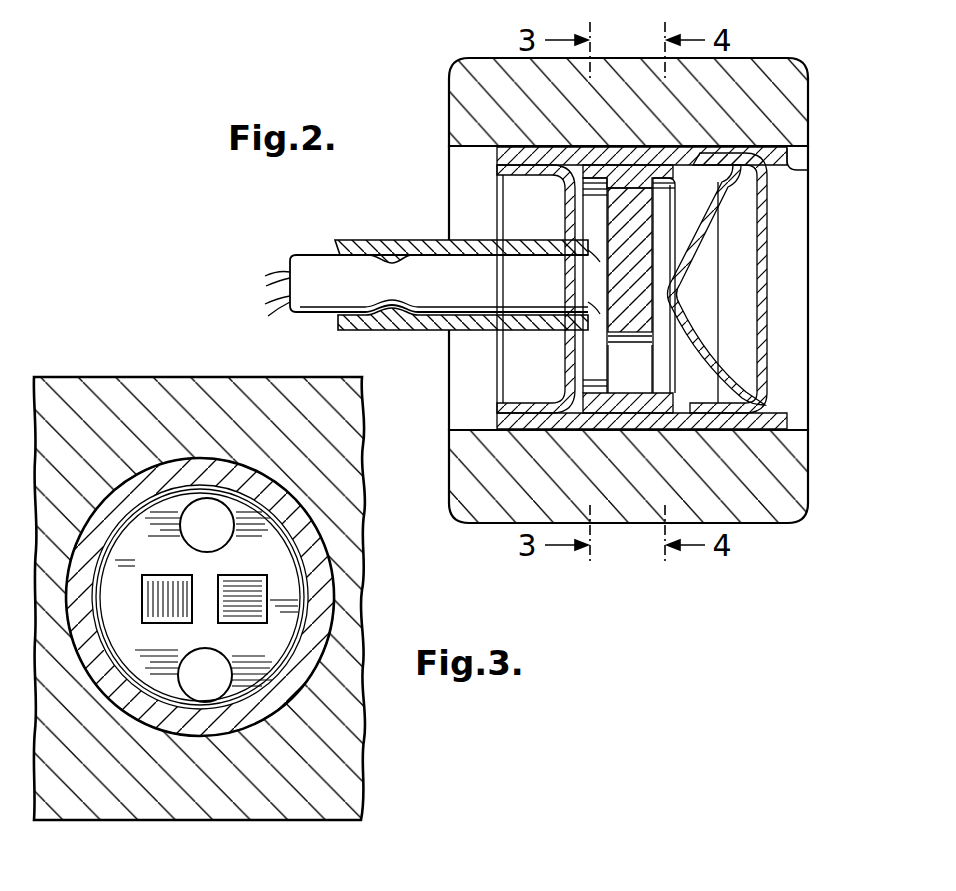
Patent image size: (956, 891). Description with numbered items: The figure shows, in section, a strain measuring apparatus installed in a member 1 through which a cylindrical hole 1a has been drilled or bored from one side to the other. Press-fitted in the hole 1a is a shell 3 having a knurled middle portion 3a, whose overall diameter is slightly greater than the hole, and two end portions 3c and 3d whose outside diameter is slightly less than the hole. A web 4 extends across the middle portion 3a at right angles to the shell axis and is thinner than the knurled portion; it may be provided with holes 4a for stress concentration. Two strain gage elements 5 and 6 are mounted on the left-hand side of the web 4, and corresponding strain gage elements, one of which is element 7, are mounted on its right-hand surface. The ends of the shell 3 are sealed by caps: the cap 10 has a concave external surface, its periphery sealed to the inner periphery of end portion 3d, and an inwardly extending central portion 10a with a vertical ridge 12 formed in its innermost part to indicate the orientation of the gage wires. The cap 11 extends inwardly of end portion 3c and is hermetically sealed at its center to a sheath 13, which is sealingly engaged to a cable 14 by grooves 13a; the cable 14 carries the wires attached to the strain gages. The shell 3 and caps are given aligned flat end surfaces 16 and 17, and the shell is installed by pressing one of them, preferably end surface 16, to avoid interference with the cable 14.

In FIG. 2, the member 1 is at (800, 113).
In FIG. 3, the member 1 is at (370, 765).
In FIG. 2, the cylindrical hole 1a is at (808, 166).
In FIG. 2, the shell 3 is at (641, 135).
In FIG. 2, the middle portion 3a is at (610, 152).
In FIG. 3, the middle portion 3a is at (207, 735).
In FIG. 2, the end portion 3c is at (544, 150).
In FIG. 2, the end portion 3d is at (697, 156).
In FIG. 2, the web 4 is at (618, 298).
In FIG. 3, the web 4 is at (245, 560).
In FIG. 2, the holes 4a is at (618, 383).
In FIG. 3, the holes 4a is at (197, 540).
In FIG. 2, the strain gage element 5 is at (588, 290).
In FIG. 3, the strain gage element 5 is at (158, 575).
In FIG. 3, the strain gage element 6 is at (254, 618).
In FIG. 2, the strain gage element 7 is at (674, 276).
In FIG. 2, the cap 10 is at (748, 222).
In FIG. 2, the inwardly extending central portion 10a is at (700, 256).
In FIG. 2, the cap 11 is at (517, 190).
In FIG. 2, the vertical ridge 12 is at (700, 308).
In FIG. 2, the sheath 13 is at (422, 240).
In FIG. 2, the grooves 13a is at (397, 243).
In FIG. 2, the cable 14 is at (440, 298).
In FIG. 2, the end surface 16 is at (764, 417).
In FIG. 2, the end surface 17 is at (500, 410).